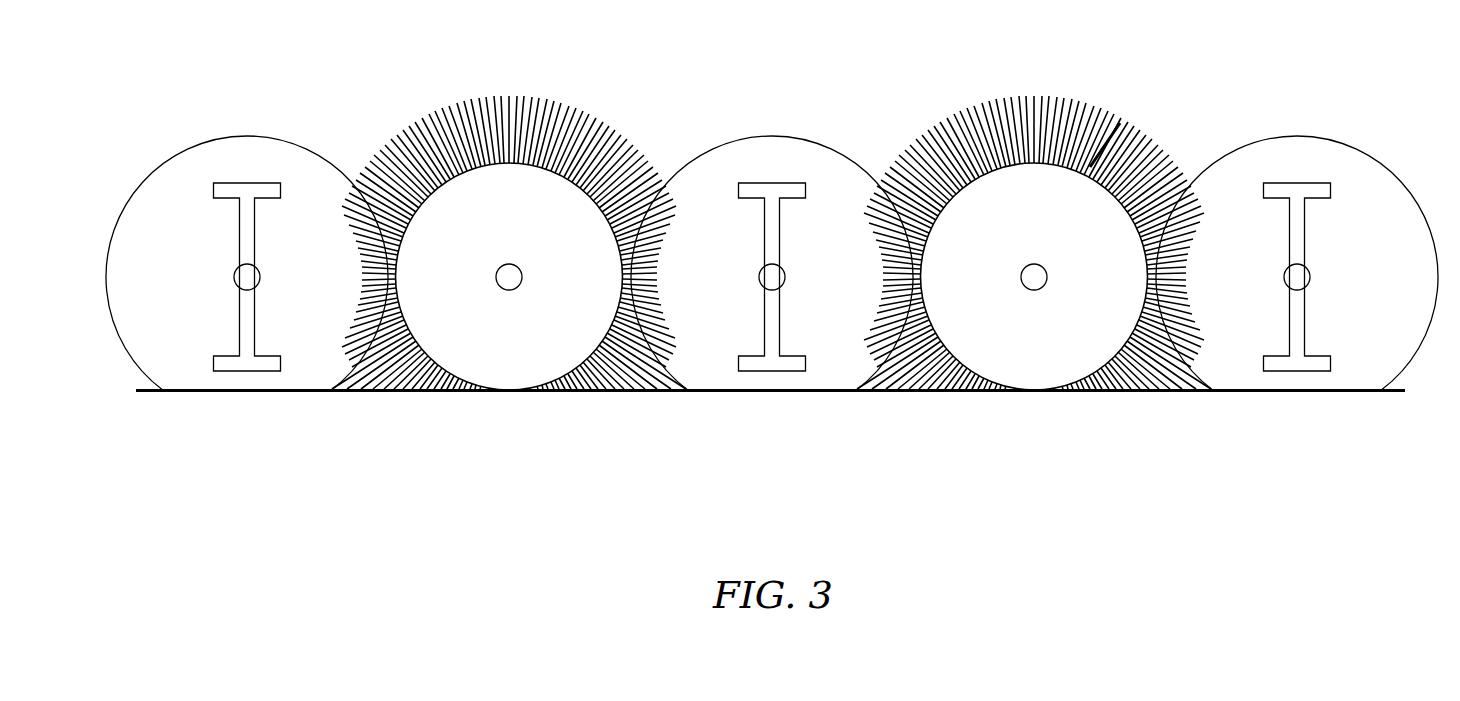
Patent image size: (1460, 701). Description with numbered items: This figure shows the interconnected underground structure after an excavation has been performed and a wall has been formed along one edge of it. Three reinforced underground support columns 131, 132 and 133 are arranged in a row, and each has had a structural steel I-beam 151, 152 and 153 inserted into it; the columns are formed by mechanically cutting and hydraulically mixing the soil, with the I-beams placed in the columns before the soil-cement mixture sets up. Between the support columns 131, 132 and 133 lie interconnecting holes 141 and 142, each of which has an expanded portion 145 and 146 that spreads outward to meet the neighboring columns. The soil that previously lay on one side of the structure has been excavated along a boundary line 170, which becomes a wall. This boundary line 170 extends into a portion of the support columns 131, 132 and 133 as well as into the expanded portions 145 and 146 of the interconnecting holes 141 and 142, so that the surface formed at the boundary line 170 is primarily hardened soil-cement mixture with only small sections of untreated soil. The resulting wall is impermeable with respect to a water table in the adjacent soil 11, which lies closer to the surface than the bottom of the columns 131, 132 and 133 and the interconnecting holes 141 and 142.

The adjacent soil 11 is at (960, 42).
The support column 131 is at (247, 242).
The support column 132 is at (772, 241).
The support column 133 is at (1297, 245).
The interconnecting hole 141 is at (509, 220).
The interconnecting hole 142 is at (1034, 227).
The expanded portion 145 is at (509, 219).
The expanded portion 146 is at (1034, 226).
The structural steel I-beam 151 is at (239, 319).
The structural steel I-beam 152 is at (803, 321).
The structural steel I-beam 153 is at (1323, 321).
The boundary line 170 is at (770, 424).